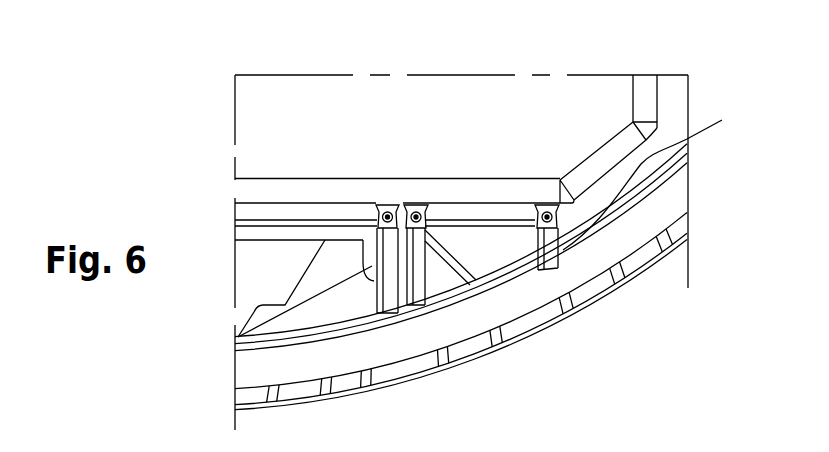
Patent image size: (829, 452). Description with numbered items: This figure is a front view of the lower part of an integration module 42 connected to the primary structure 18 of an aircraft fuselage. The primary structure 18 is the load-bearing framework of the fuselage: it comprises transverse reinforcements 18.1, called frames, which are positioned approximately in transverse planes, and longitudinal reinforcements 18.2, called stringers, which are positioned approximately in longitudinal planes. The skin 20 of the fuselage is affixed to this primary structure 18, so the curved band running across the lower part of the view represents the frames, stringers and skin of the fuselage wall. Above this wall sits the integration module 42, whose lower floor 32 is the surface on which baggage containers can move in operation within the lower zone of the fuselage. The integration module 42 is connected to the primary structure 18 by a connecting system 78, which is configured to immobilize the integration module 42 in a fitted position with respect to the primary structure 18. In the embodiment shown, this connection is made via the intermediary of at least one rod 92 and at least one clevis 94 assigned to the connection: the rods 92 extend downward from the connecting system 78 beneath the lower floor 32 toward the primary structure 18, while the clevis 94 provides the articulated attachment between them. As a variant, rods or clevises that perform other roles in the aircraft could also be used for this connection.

The integration module 42 is at (330, 106).
The lower floor 32 is at (271, 186).
The connecting system 78 is at (398, 192).
The rod 92 is at (347, 412).
The clevis 94 is at (428, 250).
The primary structure 18 is at (440, 277).
The transverse reinforcements 18.1 is at (673, 198).
The longitudinal reinforcements 18.2 is at (630, 281).
The skin 20 is at (670, 276).